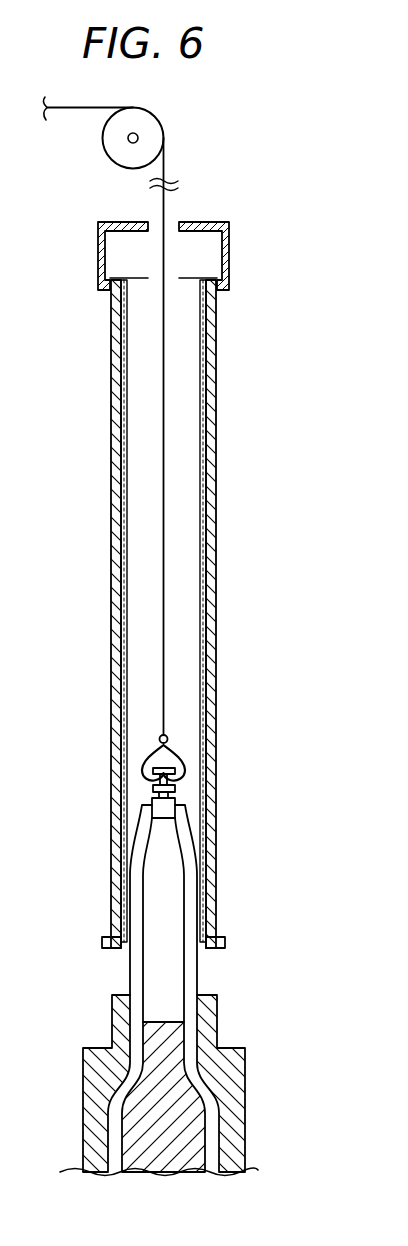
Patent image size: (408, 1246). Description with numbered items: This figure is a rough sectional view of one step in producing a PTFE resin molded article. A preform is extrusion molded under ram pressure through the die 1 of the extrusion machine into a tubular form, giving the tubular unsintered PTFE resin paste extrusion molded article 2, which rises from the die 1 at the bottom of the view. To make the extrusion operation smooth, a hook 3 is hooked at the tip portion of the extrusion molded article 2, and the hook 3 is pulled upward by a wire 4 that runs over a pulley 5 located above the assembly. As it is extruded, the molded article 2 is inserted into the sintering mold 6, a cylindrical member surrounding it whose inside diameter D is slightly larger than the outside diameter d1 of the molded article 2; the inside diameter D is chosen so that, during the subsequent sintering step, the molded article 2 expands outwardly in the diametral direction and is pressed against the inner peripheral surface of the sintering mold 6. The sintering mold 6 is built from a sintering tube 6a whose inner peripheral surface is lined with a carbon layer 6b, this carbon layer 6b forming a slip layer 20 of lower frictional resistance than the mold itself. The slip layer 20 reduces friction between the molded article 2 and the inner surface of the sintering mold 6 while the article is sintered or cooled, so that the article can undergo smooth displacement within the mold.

The die 1 is at (241, 1048).
The unsintered PTFE resin paste extrusion molded article 2 is at (193, 957).
The hook 3 is at (167, 808).
The wire 4 is at (164, 576).
The pulley 5 is at (152, 132).
The sintering mold 6 is at (231, 614).
The sintering tube 6a is at (210, 429).
The carbon layer 6b is at (203, 470).
The slip layer 20 is at (201, 368).
The inside diameter of the sintering mold D is at (127, 632).
The outside diameter of the paste extrusion molded article d1 is at (184, 917).